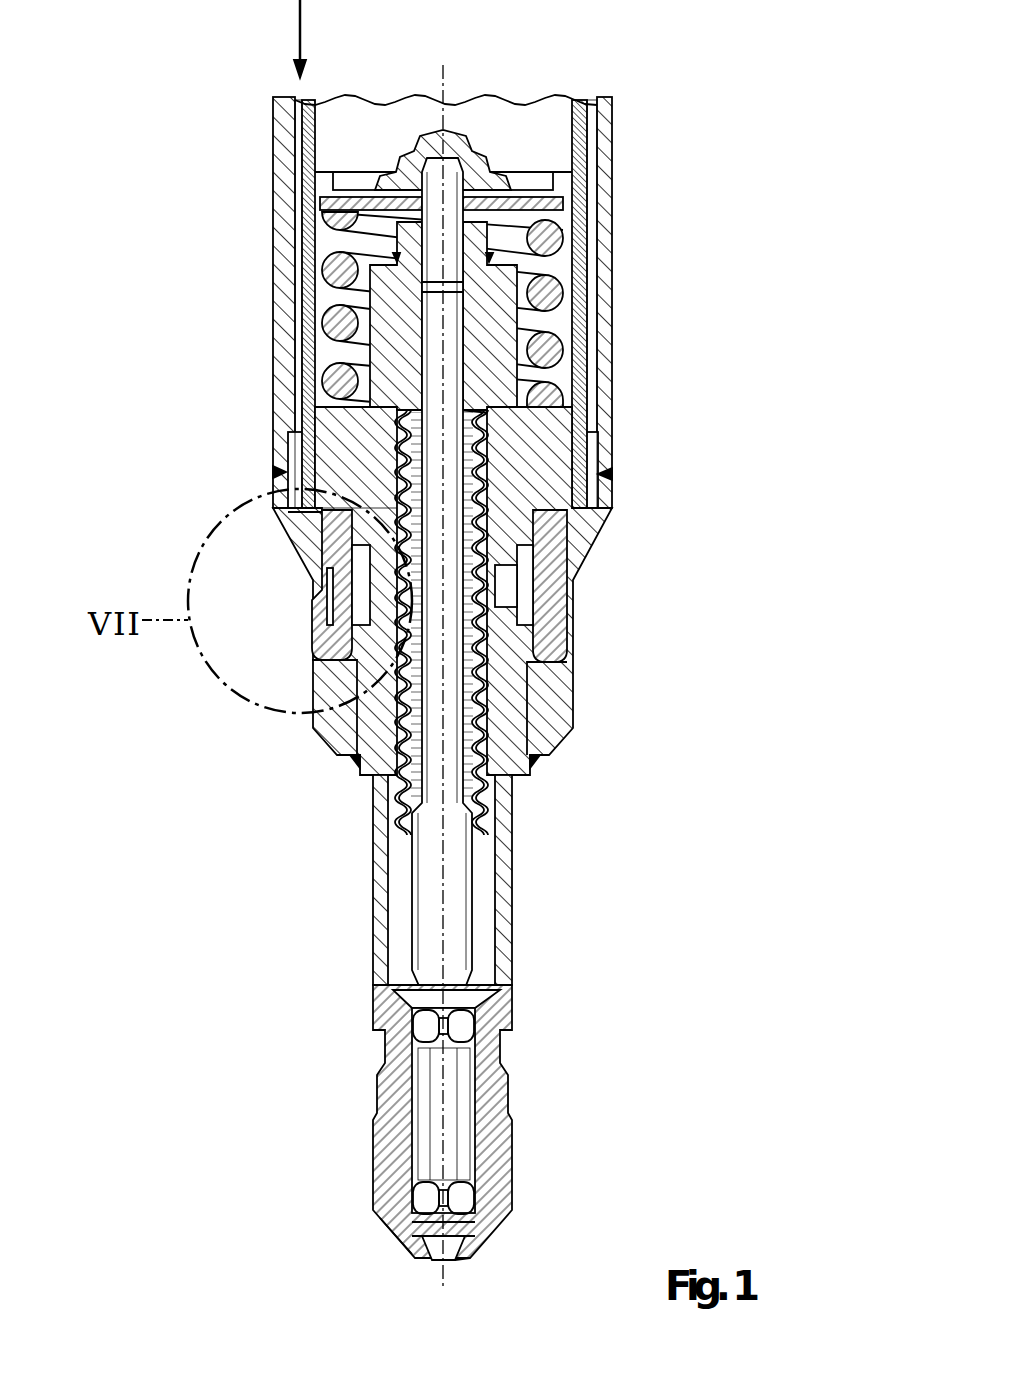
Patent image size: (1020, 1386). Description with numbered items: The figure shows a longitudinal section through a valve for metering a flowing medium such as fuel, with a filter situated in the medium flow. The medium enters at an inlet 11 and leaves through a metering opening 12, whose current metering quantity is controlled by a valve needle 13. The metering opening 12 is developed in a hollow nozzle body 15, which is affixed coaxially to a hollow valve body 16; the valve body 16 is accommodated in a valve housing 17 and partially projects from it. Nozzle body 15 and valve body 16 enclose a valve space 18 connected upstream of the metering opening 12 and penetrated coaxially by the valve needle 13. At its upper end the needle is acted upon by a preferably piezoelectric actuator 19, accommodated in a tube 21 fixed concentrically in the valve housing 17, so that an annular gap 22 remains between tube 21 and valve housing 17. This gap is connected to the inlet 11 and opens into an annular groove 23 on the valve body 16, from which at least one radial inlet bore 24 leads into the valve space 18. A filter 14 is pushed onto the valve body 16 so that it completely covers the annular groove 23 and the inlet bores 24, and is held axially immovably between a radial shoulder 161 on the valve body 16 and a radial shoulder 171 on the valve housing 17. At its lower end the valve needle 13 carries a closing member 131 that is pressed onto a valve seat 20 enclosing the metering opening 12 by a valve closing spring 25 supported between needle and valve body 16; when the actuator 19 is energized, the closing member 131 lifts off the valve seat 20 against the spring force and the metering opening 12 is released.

The inlet 11 is at (303, 24).
The metering opening 12 is at (395, 1232).
The valve needle 13 is at (432, 593).
The filter 14 is at (568, 560).
The nozzle body 15 is at (493, 1152).
The valve body 16 is at (505, 693).
The valve housing 17 is at (600, 320).
The valve space 18 is at (483, 862).
The actuator 19 is at (527, 113).
The valve seat 20 is at (473, 1237).
The tube 21 is at (308, 238).
The annular gap 22 is at (298, 352).
The annular groove 23 is at (523, 600).
The inlet bore 24 is at (507, 588).
The valve closing spring 25 is at (550, 238).
The closing member 131 is at (428, 1238).
The radial shoulder 161 is at (363, 503).
The radial shoulder 171 is at (335, 672).